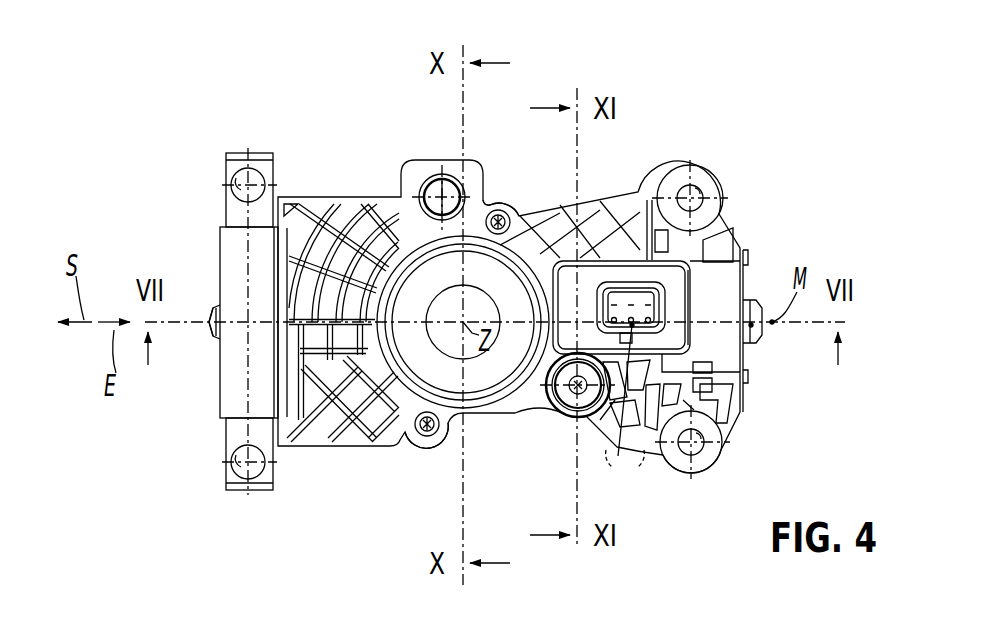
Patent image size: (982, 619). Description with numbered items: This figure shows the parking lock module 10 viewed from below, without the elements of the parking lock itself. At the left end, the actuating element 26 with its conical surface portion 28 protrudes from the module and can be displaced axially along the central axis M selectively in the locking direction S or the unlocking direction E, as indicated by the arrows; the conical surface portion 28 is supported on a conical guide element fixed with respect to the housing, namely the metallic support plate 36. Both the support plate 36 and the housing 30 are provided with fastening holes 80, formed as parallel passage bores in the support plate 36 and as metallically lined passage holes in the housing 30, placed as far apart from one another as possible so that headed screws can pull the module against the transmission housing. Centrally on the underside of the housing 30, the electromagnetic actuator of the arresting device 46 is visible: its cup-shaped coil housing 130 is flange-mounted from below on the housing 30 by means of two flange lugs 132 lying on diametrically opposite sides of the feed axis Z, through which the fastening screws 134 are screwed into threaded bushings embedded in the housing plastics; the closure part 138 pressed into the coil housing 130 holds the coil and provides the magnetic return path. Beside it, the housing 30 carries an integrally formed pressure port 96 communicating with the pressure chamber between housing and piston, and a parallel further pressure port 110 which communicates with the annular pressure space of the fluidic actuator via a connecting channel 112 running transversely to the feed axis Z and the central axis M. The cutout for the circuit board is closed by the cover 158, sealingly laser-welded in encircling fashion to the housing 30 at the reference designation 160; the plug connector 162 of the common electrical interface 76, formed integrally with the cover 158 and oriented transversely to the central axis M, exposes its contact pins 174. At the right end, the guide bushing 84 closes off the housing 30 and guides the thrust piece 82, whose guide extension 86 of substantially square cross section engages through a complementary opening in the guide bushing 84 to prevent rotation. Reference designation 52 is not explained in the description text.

The parking lock module 10 is at (718, 132).
The actuating element 26 is at (212, 335).
The conical surface portion 28 is at (214, 306).
The housing 30 is at (330, 202).
The support plate 36 is at (258, 152).
The arresting device 46 is at (487, 373).
The bearing 52 is at (222, 345).
The electrical interface 76 is at (668, 287).
The fastening holes 80 is at (243, 183).
The thrust piece 82 is at (750, 340).
The guide bushing 84 is at (745, 355).
The guide extension 86 is at (752, 325).
The pressure port 96 is at (571, 405).
The pressure port 110 is at (463, 190).
The connecting channel 112 is at (447, 184).
The coil housing 130 is at (556, 212).
The flange lugs 132 is at (515, 246).
The fastening screws 134 is at (503, 214).
The closure part 138 is at (463, 322).
The cover 158 is at (611, 308).
The laser weld 160 is at (647, 258).
The plug connector 162 is at (692, 290).
The contact pins 174 is at (624, 404).